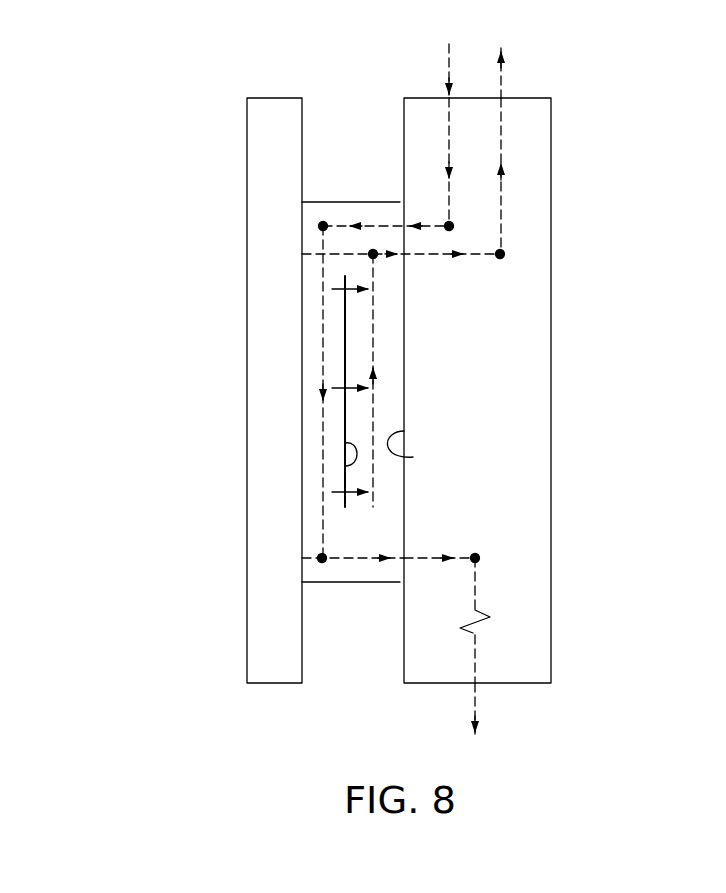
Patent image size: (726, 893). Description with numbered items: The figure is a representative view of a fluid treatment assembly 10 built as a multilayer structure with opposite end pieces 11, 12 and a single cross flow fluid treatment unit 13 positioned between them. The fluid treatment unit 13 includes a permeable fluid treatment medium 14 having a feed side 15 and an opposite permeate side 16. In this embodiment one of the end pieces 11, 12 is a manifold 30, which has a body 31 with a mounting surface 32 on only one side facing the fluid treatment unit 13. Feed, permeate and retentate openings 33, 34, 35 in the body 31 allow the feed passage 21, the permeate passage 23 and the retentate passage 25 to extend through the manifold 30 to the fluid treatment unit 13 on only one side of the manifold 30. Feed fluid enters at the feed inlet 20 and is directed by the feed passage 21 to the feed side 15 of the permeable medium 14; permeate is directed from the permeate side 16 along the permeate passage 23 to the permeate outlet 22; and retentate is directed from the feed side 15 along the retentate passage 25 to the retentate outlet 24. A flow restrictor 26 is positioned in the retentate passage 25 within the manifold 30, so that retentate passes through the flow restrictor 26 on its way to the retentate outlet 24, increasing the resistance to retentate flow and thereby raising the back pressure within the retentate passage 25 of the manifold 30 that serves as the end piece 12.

The fluid treatment assembly 10 is at (333, 72).
The end piece 11 is at (268, 130).
The end piece 12 is at (527, 197).
The fluid treatment unit 13 is at (313, 268).
The permeable fluid treatment medium 14 is at (345, 343).
The feed side 15 is at (345, 315).
The permeate side 16 is at (347, 467).
The feed inlet 20 is at (448, 62).
The feed passage 21 is at (449, 150).
The permeate outlet 22 is at (502, 83).
The permeate passage 23 is at (501, 237).
The retentate outlet 24 is at (477, 698).
The retentate passage 25 is at (347, 556).
The flow restrictor 26 is at (488, 617).
The manifold 30 is at (535, 128).
The body 31 is at (525, 658).
The mounting surface 32 is at (413, 457).
The feed opening 33 is at (405, 226).
The permeate opening 34 is at (405, 257).
The retentate opening 35 is at (413, 556).